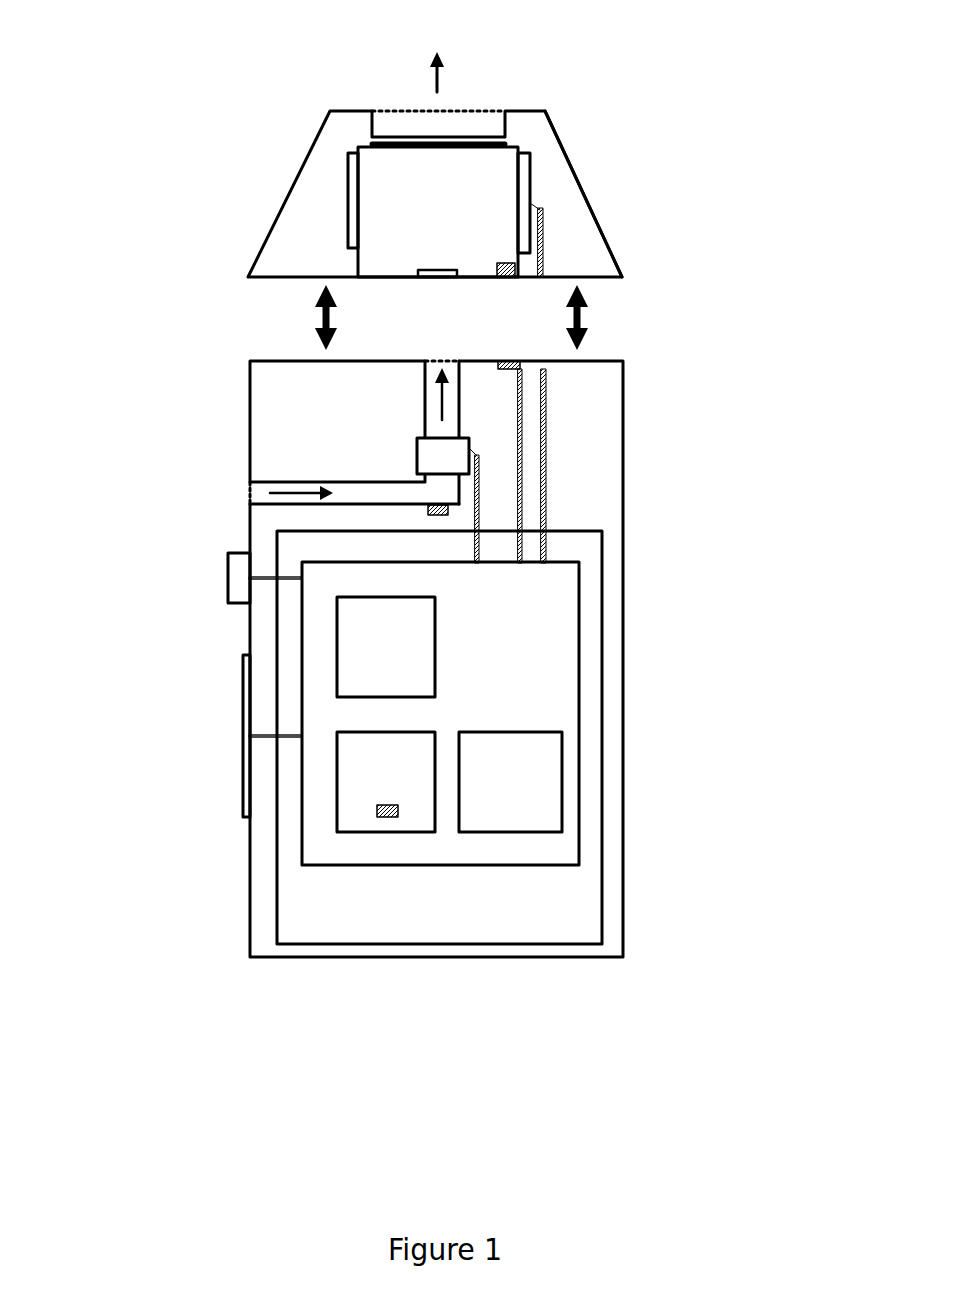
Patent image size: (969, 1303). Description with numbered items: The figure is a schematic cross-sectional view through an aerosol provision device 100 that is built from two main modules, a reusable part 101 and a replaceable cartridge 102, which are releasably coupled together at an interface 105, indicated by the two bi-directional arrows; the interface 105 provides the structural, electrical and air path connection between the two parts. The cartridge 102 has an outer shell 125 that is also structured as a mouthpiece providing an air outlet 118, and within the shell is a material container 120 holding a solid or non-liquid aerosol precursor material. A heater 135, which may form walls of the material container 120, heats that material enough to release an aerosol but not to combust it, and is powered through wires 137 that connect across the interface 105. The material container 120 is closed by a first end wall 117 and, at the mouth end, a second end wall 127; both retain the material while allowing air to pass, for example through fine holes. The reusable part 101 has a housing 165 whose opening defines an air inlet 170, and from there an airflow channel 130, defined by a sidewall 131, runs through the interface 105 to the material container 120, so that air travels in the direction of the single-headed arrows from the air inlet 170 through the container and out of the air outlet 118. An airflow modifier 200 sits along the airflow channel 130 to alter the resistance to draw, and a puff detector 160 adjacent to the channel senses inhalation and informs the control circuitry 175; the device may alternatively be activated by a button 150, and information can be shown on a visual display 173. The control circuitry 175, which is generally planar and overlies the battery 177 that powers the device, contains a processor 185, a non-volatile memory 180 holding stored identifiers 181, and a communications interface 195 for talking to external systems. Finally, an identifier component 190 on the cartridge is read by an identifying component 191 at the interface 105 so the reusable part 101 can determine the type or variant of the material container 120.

The aerosol provision device 100 is at (190, 86).
The reusable part 101 is at (683, 362).
The cartridge 102 is at (683, 112).
The interface 105 is at (290, 278).
The first end wall 117 is at (436, 278).
The air outlet 118 is at (418, 110).
The material container 120 is at (453, 214).
The outer shell 125 is at (557, 130).
The second end wall 127 is at (444, 137).
The airflow channel 130 is at (353, 492).
The sidewall 131 is at (425, 393).
The heater 135 is at (348, 178).
The wires 137 is at (540, 222).
The button 150 is at (228, 585).
The puff detector 160 is at (433, 517).
The housing 165 is at (250, 432).
The air inlet 170 is at (245, 497).
The visual display 173 is at (243, 720).
The control circuitry 175 is at (525, 669).
The battery 177 is at (602, 785).
The non-volatile memory 180 is at (407, 797).
The stored identifiers 181 is at (392, 820).
The processor 185 is at (531, 797).
The identifier component 190 is at (497, 268).
The identifying component 191 is at (520, 368).
The communications interface 195 is at (407, 661).
The airflow modifier 200 is at (432, 455).